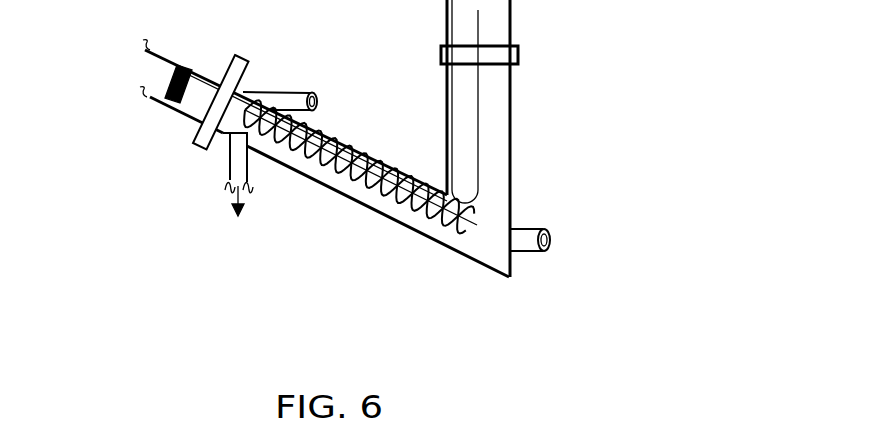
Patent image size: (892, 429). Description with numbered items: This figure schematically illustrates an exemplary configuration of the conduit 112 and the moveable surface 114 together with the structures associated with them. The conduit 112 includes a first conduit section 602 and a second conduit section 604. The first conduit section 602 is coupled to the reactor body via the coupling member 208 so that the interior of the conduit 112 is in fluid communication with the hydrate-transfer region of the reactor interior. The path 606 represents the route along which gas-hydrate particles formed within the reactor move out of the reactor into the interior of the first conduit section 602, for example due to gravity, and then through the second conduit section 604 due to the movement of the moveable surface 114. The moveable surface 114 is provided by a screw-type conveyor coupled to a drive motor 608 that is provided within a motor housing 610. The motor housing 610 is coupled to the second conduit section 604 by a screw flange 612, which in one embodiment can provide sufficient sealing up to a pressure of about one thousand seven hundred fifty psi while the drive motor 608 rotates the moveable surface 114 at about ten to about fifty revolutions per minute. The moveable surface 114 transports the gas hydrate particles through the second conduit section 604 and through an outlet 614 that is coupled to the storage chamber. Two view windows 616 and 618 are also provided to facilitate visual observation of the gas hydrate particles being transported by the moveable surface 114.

The conduit 112 is at (653, 150).
The moveable surface 114 is at (378, 170).
The coupling member 208 is at (516, 45).
The first conduit section 602 is at (519, 160).
The second conduit section 604 is at (445, 252).
The path 606 is at (474, 101).
The drive motor 608 is at (175, 72).
The motor housing 610 is at (181, 114).
The screw flange 612 is at (240, 50).
The outlet 614 is at (223, 160).
The view window 616 is at (291, 86).
The view window 618 is at (531, 224).